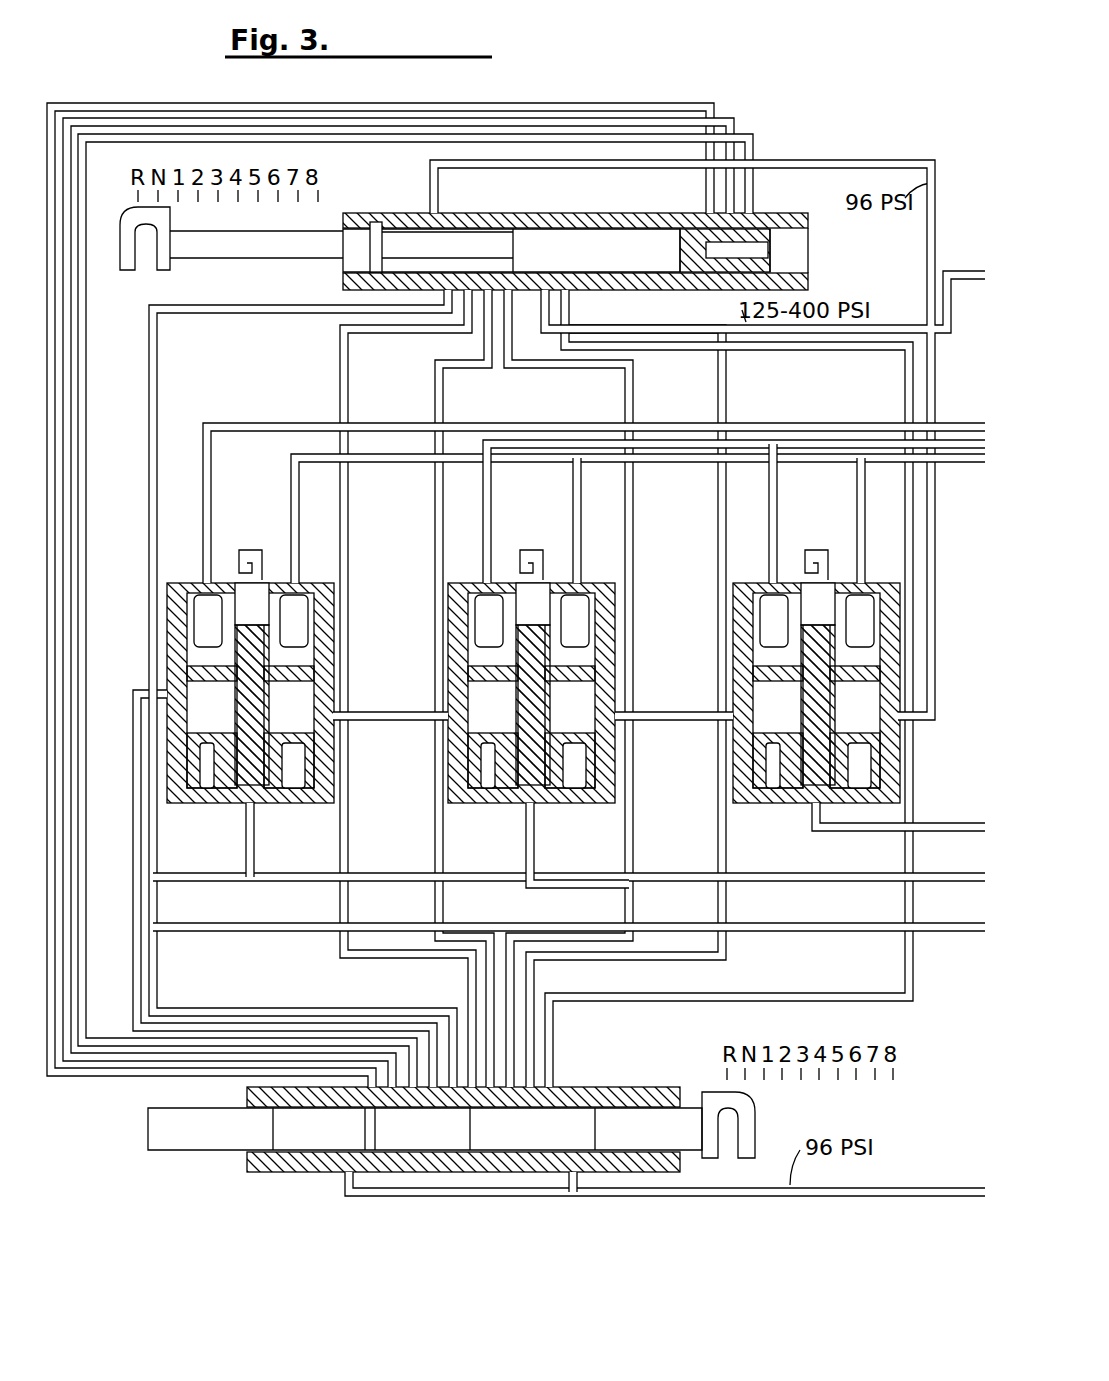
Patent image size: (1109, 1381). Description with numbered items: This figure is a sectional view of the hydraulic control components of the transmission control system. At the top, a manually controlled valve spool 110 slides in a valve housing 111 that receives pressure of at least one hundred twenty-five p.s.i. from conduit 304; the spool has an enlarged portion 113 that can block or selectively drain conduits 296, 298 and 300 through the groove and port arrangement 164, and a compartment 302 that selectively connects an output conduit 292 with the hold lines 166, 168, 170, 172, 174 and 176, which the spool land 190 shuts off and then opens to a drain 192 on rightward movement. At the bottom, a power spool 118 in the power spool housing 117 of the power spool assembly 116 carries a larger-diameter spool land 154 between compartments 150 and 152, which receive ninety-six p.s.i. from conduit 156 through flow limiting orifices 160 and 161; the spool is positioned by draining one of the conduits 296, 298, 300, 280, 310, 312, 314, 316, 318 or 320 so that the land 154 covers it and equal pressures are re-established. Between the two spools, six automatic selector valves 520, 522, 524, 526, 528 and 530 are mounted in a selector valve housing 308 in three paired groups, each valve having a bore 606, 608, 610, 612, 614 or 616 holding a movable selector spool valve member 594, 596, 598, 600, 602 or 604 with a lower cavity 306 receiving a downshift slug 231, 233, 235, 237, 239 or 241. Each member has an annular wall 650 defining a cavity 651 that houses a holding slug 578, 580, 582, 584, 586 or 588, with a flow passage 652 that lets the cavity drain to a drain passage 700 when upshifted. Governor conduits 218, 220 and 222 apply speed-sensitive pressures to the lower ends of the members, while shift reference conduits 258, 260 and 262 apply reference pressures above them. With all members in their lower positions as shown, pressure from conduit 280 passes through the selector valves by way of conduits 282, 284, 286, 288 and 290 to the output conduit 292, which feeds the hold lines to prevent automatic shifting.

The manually controlled valve spool 110 is at (190, 260).
The valve housing 111 is at (772, 226).
The enlarged portion 113 is at (597, 242).
The power spool assembly 116 is at (252, 1178).
The power spool housing 117 is at (250, 1087).
The power spool 118 is at (690, 1125).
The compartment 150 is at (318, 1152).
The compartment 152 is at (500, 1165).
The spool land 154 is at (373, 1150).
The conduit 156 is at (686, 1195).
The flow limiting orifice 160 is at (345, 1172).
The flow limiting orifice 161 is at (570, 1170).
The groove and port arrangement 164 is at (770, 252).
The hold line conduit 166 is at (158, 354).
The hold line conduit 168 is at (349, 380).
The hold line conduit 170 is at (444, 408).
The hold line conduit 172 is at (633, 400).
The hold line conduit 174 is at (728, 402).
The hold line conduit 176 is at (902, 374).
The spool land 190 is at (377, 222).
The drain 192 is at (358, 272).
The governor conduit 218 is at (928, 933).
The governor conduit 220 is at (952, 881).
The governor conduit 222 is at (932, 832).
The downshift slug 231 is at (206, 790).
The downshift slug 233 is at (302, 772).
The downshift slug 235 is at (486, 801).
The downshift slug 237 is at (586, 801).
The downshift slug 239 is at (776, 801).
The downshift slug 241 is at (871, 763).
The shift reference conduit 258 is at (246, 420).
The shift reference conduit 260 is at (545, 438).
The shift reference conduit 262 is at (700, 466).
The conduit 280 is at (158, 895).
The conduit 282 is at (344, 716).
The conduit 284 is at (334, 730).
The conduit 286 is at (622, 712).
The conduit 288 is at (616, 736).
The conduit 290 is at (906, 721).
The output conduit 292 is at (868, 165).
The conduit 296 is at (608, 112).
The conduit 298 is at (724, 124).
The conduit 300 is at (753, 150).
The compartment 302 is at (492, 228).
The conduit 304 is at (718, 324).
The cavity 306 is at (228, 790).
The selector valve housing 308 is at (262, 808).
The conduit 310 is at (158, 848).
The conduit 312 is at (472, 978).
The conduit 314 is at (438, 868).
The conduit 316 is at (623, 852).
The conduit 318 is at (716, 842).
The conduit 320 is at (903, 856).
The automatic selector valve 520 is at (191, 569).
The automatic selector valve 522 is at (302, 577).
The automatic selector valve 524 is at (447, 570).
The automatic selector valve 526 is at (606, 580).
The automatic selector valve 528 is at (650, 586).
The automatic selector valve 530 is at (900, 586).
The holding slug 578 is at (196, 620).
The holding slug 580 is at (320, 648).
The holding slug 582 is at (322, 661).
The holding slug 584 is at (612, 631).
The holding slug 586 is at (615, 649).
The holding slug 588 is at (905, 623).
The selector spool valve member 594 is at (176, 691).
The selector spool valve member 596 is at (321, 676).
The selector spool valve member 598 is at (330, 746).
The selector spool valve member 600 is at (615, 671).
The selector spool valve member 602 is at (620, 741).
The selector spool valve member 604 is at (905, 701).
The bore 606 is at (245, 578).
The bore 608 is at (330, 613).
The bore 610 is at (516, 578).
The bore 612 is at (612, 601).
The bore 614 is at (801, 580).
The bore 616 is at (901, 599).
The annular wall 650 is at (192, 597).
The cavity 651 is at (186, 641).
The flow passage 652 is at (181, 656).
The drain passage 700 is at (255, 545).